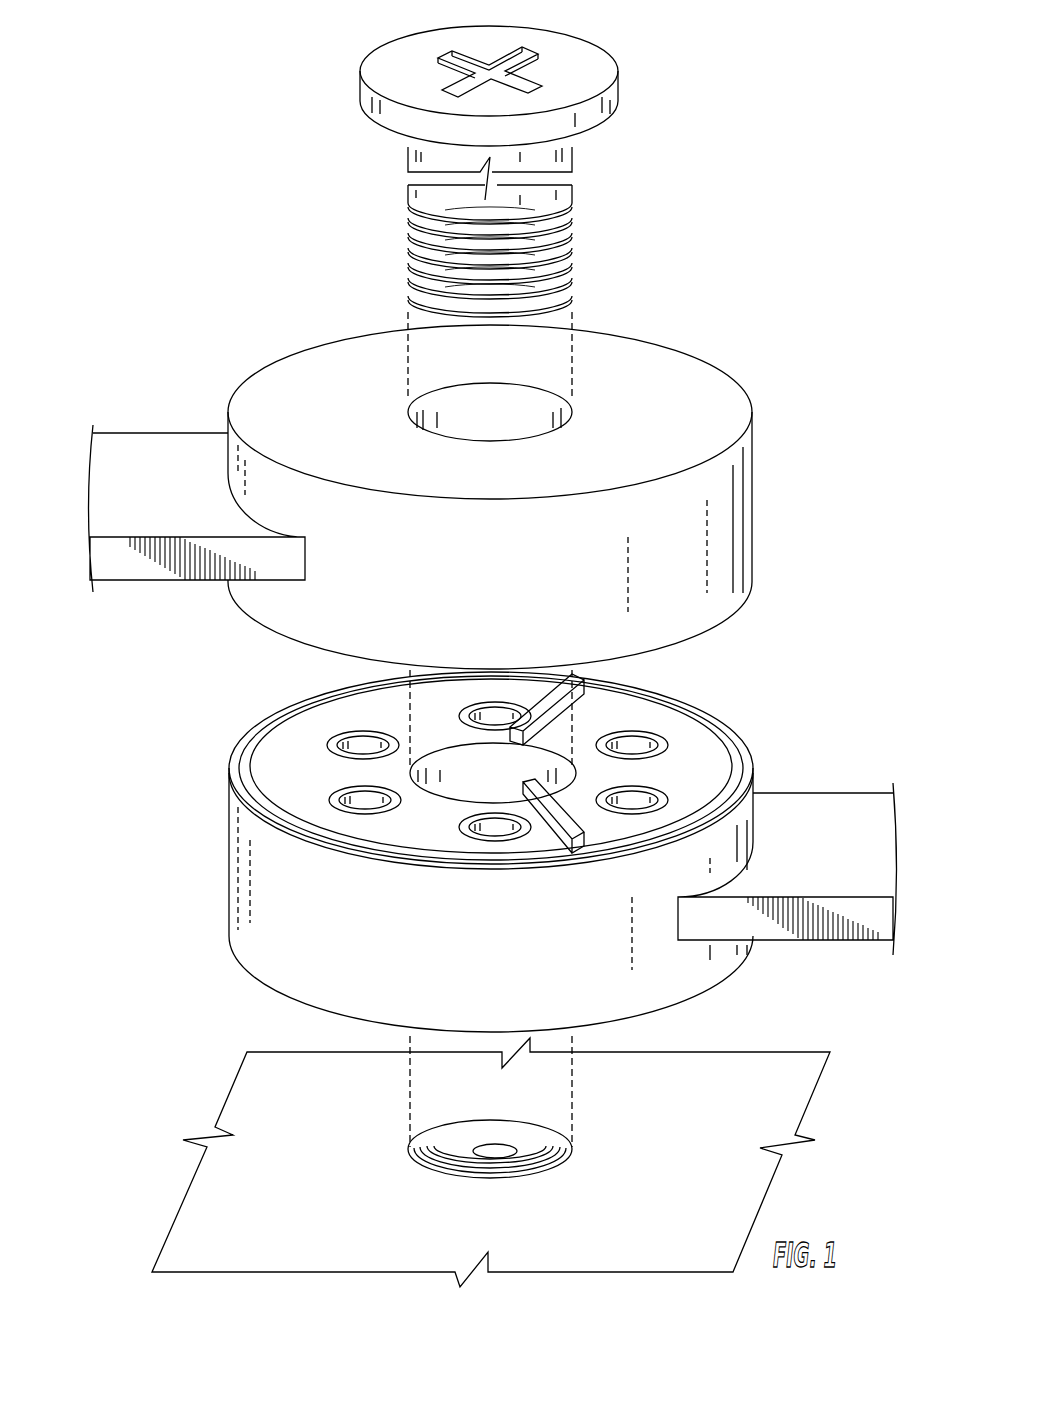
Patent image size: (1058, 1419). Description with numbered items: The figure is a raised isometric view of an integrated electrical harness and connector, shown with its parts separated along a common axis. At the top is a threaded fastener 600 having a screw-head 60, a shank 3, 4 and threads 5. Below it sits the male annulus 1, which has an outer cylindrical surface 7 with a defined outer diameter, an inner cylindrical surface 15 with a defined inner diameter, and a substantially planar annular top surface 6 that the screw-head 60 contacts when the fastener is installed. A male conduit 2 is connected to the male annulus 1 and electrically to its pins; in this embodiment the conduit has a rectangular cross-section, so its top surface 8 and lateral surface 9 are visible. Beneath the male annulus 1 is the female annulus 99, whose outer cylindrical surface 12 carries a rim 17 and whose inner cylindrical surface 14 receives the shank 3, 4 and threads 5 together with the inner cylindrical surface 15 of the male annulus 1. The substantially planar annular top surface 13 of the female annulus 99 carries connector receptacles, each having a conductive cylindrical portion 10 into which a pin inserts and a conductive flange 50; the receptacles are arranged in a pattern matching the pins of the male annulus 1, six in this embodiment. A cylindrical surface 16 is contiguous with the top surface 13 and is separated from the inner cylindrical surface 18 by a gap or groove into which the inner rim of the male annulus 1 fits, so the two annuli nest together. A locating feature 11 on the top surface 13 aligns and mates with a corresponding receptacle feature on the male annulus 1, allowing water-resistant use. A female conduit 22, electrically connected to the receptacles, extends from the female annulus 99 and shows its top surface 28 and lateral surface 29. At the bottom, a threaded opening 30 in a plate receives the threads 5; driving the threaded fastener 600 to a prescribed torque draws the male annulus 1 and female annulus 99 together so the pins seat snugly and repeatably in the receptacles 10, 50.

The male annulus 1 is at (300, 296).
The threaded fastener 600 is at (475, 158).
The screw-head 60 is at (568, 52).
The shank 3 is at (408, 152).
The shank 4 is at (408, 190).
The threads 5 is at (415, 230).
The male conduit 2 is at (443, 481).
The substantially planar annular top surface 6 is at (610, 383).
The outer cylindrical surface 7 is at (737, 507).
The inner cylindrical surface 15 is at (503, 407).
The top surface 8 is at (145, 508).
The lateral surface 9 is at (152, 567).
The female conduit 22 is at (531, 840).
The outer cylindrical surface 12 is at (491, 840).
The rim 17 is at (757, 768).
The outer cylindrical surface 16 is at (748, 758).
The inner cylindrical surface 18 is at (250, 757).
The substantially planar annular top surface 13 is at (283, 781).
The female annulus 99 is at (717, 995).
The flange 50 is at (358, 738).
The cylindrical portion 10 is at (348, 800).
The inner cylindrical surface 14 is at (477, 778).
The locating feature 11 is at (587, 690).
The top surface 28 is at (869, 812).
The lateral surface 29 is at (848, 927).
The threaded opening 30 is at (407, 1147).